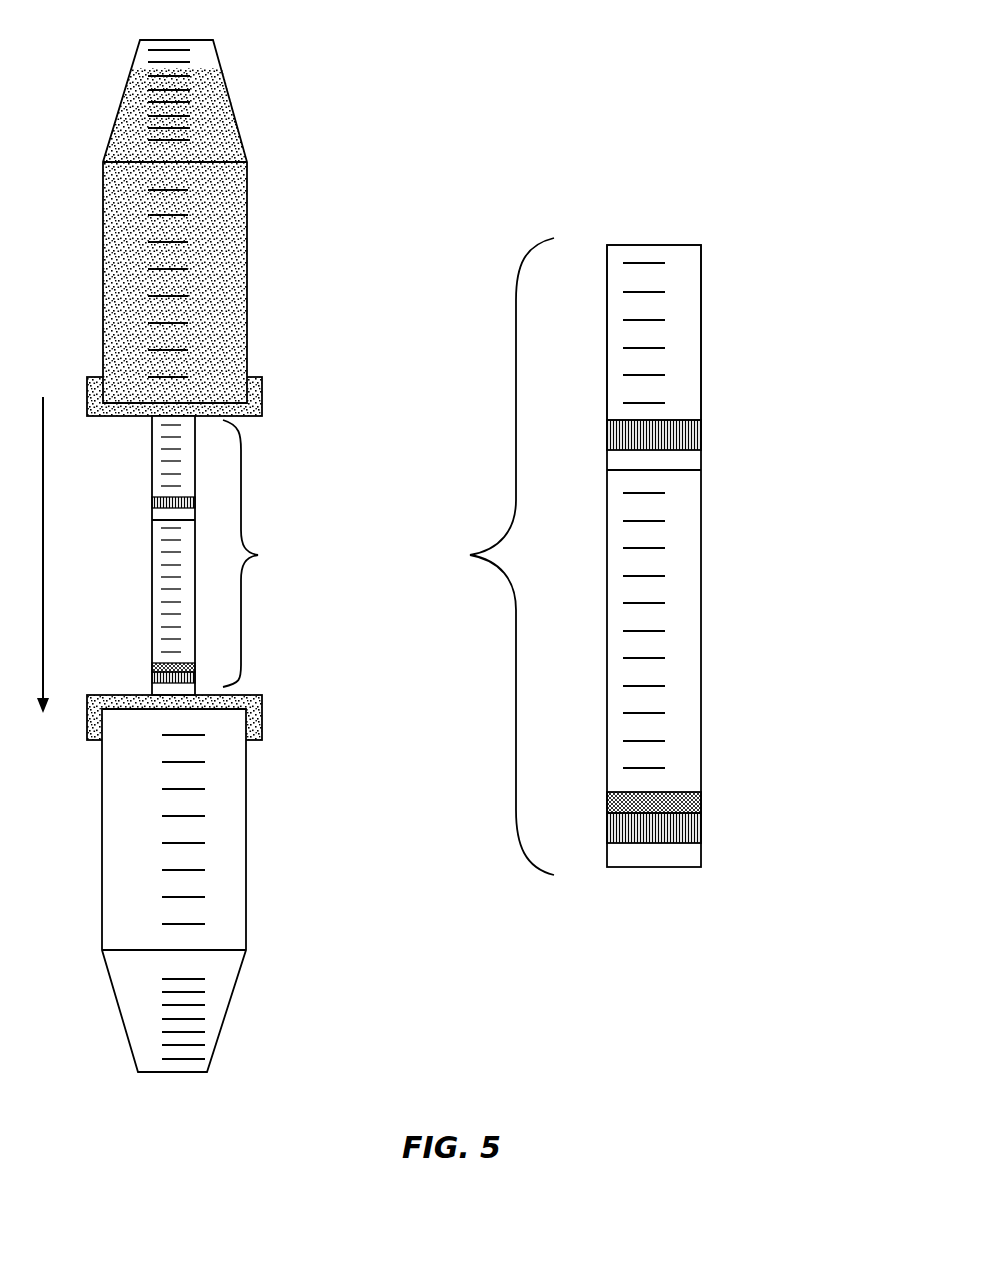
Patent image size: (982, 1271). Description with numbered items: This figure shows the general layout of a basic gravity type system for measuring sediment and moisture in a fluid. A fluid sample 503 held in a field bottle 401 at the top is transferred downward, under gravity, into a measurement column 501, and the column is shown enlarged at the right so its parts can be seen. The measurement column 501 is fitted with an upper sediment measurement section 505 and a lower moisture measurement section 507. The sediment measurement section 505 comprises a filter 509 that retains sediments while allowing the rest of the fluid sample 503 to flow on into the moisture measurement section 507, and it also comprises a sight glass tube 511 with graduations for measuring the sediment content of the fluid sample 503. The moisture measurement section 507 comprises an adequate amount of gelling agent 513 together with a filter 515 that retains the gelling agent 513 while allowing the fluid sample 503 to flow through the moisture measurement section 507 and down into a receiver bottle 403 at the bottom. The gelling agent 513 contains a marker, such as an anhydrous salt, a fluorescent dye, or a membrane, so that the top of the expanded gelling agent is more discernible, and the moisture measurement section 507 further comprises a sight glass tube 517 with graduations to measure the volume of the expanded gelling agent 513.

The field bottle 401 is at (137, 55).
The receiver bottle 403 is at (102, 850).
The measurement column 501 is at (452, 555).
The fluid sample 503 is at (120, 283).
The sediment measurement section 505 is at (607, 330).
The moisture measurement section 507 is at (607, 638).
The filter 509 is at (725, 435).
The sight glass tube 511 is at (725, 277).
The gelling agent 513 is at (725, 801).
The filter 515 is at (725, 827).
The sight glass tube 517 is at (725, 632).